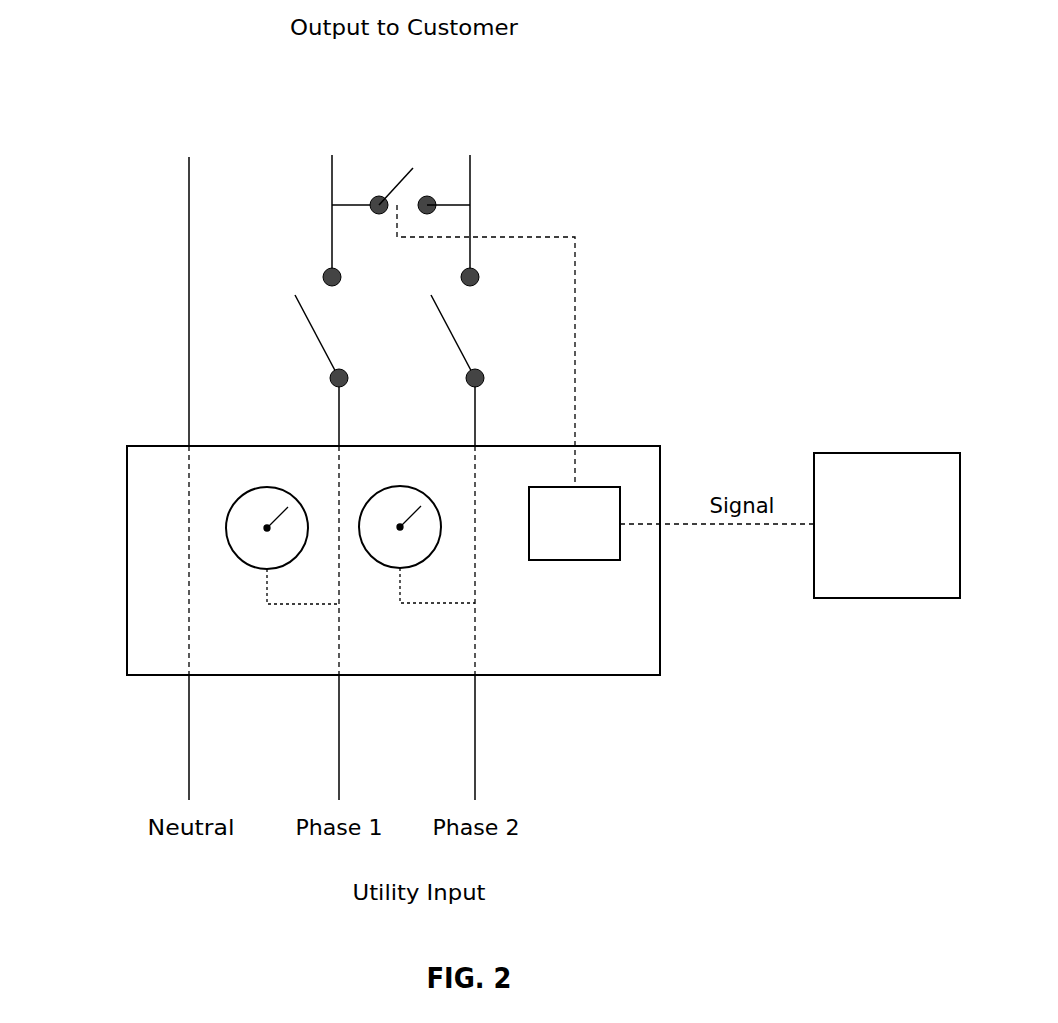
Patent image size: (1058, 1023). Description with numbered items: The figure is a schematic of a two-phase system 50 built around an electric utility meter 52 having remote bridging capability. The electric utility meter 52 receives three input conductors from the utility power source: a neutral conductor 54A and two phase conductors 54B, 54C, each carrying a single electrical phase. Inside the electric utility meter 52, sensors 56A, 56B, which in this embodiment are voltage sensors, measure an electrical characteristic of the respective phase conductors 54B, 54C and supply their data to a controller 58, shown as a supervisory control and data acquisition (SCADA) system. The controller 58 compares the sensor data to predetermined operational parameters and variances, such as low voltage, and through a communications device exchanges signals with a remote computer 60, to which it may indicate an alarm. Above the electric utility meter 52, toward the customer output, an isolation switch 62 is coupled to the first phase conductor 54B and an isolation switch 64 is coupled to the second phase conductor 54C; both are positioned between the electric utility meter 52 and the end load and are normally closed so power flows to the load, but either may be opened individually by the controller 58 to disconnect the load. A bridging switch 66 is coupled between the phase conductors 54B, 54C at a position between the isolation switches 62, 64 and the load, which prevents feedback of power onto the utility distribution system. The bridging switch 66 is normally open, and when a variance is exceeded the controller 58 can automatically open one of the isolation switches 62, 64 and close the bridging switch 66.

The two-phase system 50 is at (746, 128).
The electric utility meter 52 is at (127, 600).
The neutral conductor 54A is at (189, 723).
The first phase conductor 54B is at (339, 723).
The second phase conductor 54C is at (475, 748).
The sensor 56A is at (237, 497).
The sensor 56B is at (377, 562).
The controller 58 is at (575, 560).
The remote computer 60 is at (933, 453).
The isolation switch 62 is at (314, 361).
The isolation switch 64 is at (474, 312).
The bridging switch 66 is at (394, 166).